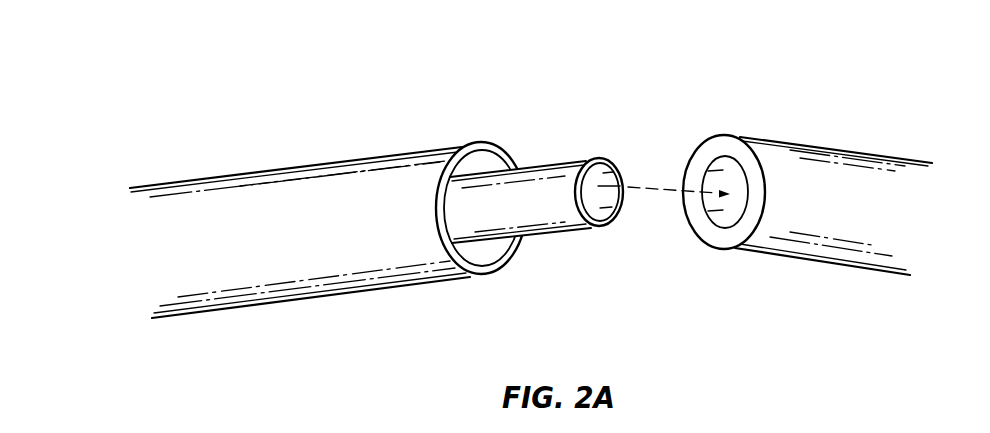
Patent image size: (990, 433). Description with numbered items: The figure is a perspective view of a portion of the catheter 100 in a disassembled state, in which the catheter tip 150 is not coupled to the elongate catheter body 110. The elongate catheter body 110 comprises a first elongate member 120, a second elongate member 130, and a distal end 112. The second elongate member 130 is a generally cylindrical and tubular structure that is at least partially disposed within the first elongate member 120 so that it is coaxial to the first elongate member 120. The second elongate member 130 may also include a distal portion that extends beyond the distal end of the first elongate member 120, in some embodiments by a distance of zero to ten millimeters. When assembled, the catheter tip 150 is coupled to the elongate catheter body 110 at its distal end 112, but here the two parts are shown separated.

The catheter 100 is at (529, 179).
The elongate catheter body 110 is at (397, 200).
The first elongate member 120 is at (187, 187).
The second elongate member 130 is at (577, 236).
The distal end 112 is at (623, 218).
The catheter tip 150 is at (880, 165).